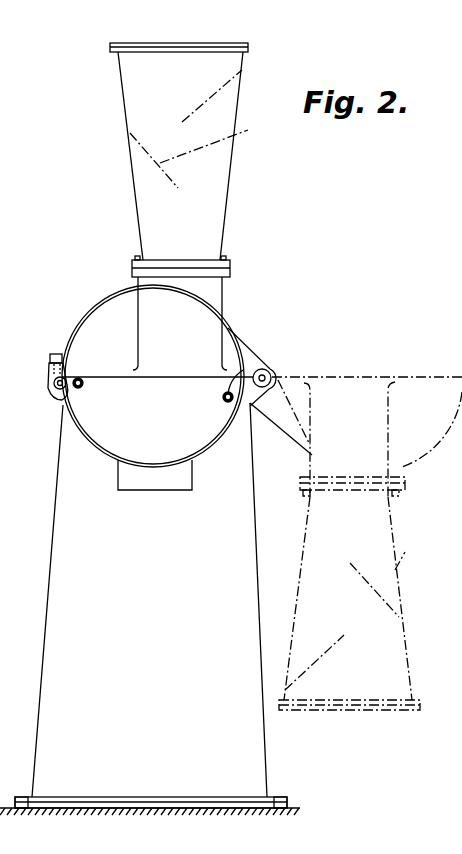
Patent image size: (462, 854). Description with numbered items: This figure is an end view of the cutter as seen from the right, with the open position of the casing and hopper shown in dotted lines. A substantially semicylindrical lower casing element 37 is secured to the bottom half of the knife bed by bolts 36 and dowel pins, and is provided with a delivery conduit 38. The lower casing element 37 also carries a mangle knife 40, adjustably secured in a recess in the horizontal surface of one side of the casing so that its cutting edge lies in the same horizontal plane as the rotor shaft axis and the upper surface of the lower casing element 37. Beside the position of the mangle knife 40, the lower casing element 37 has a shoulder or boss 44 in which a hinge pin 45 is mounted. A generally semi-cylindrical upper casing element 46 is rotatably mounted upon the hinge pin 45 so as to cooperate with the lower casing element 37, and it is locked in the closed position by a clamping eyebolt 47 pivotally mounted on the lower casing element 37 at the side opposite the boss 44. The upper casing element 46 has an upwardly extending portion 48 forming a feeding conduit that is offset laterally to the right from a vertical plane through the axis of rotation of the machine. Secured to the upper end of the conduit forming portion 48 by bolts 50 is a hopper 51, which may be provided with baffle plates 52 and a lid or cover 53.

The lid 53 is at (116, 44).
The baffle plates 52 is at (193, 117).
The hopper 51 is at (223, 234).
The bolts 50 is at (230, 258).
The upwardly extending portion 48 is at (203, 305).
The upper casing element 46 is at (228, 348).
The bolts 36 is at (62, 397).
The hinge pin 45 is at (269, 375).
The boss 44 is at (252, 404).
The clamping eyebolt 47 is at (50, 357).
The lower casing element 37 is at (87, 416).
The delivery conduit 38 is at (143, 473).
The mangle knife 40 is at (43, 642).